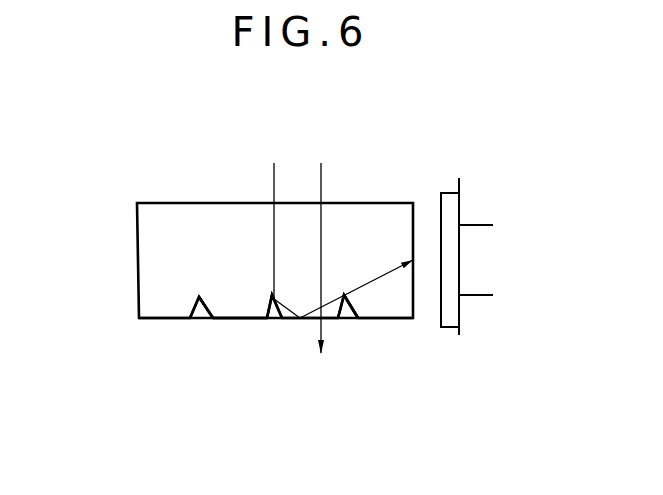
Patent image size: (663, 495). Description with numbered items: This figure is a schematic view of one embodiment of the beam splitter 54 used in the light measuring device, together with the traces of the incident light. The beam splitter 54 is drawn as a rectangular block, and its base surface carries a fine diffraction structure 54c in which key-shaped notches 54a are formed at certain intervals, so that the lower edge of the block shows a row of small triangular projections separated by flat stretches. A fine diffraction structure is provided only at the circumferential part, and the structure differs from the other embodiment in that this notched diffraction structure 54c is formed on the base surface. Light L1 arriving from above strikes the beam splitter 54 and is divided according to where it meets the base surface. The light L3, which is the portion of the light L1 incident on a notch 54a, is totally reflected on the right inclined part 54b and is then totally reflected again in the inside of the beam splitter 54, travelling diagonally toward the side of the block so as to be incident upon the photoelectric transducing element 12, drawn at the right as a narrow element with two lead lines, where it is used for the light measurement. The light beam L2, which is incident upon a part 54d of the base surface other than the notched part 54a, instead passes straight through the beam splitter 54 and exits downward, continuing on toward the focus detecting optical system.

The photoelectric transducing element 12 is at (487, 251).
The beam splitter 54 is at (142, 245).
The notch 54a is at (199, 320).
The right inclined part 54b is at (225, 320).
The fine diffraction structure 54c is at (392, 372).
The part other than the notched part 54d is at (238, 316).
The light incident upon the beam splitter L1 is at (363, 136).
The light beam incident upon the part other than the notched part L2 is at (322, 187).
The light incident on the notch L3 is at (275, 187).